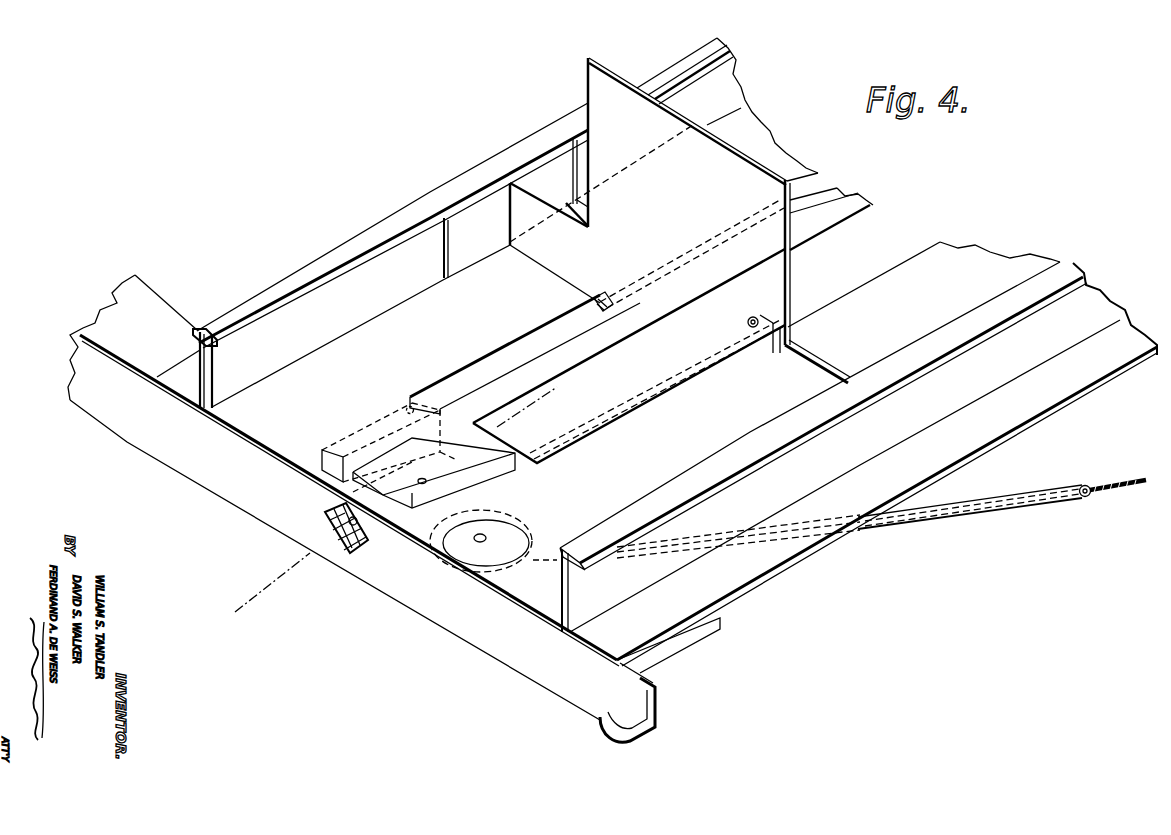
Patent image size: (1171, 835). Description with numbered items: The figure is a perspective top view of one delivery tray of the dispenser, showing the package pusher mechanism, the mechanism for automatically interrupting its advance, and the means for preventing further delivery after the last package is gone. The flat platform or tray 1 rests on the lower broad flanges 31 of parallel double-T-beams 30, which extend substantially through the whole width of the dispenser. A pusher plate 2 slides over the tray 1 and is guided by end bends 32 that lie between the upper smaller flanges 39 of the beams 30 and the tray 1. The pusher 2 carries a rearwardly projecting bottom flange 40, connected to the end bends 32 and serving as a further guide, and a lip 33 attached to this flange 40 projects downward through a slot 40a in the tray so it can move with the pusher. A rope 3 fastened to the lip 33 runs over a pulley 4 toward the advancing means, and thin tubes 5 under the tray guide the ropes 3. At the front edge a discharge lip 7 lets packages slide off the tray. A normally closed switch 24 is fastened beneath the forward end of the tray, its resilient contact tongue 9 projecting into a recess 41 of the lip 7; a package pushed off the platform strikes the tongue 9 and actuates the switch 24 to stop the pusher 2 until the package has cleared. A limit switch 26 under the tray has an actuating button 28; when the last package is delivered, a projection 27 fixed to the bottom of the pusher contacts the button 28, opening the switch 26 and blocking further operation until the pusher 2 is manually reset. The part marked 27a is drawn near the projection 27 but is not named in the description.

The platform or tray 1 is at (559, 370).
The pusher plate 2 is at (792, 254).
The rope 3 is at (668, 389).
The pulley 4 is at (527, 531).
The thin tubes 5 is at (987, 510).
The discharge lip 7 is at (150, 440).
The contact tongue 9 is at (366, 545).
The switch 24 is at (469, 440).
The limit switch 26 is at (362, 433).
The projection 27 is at (601, 311).
The slide strip 27a is at (546, 338).
The actuating button 28 is at (406, 408).
The double-T-beams 30 is at (735, 43).
The lower broad flanges 31 is at (230, 421).
The end bends 32 is at (479, 243).
The lip 33 is at (726, 303).
The upper smaller flanges 39 is at (412, 216).
The bottom flange 40 is at (590, 213).
The slot 40a is at (598, 398).
The recess 41 is at (336, 548).